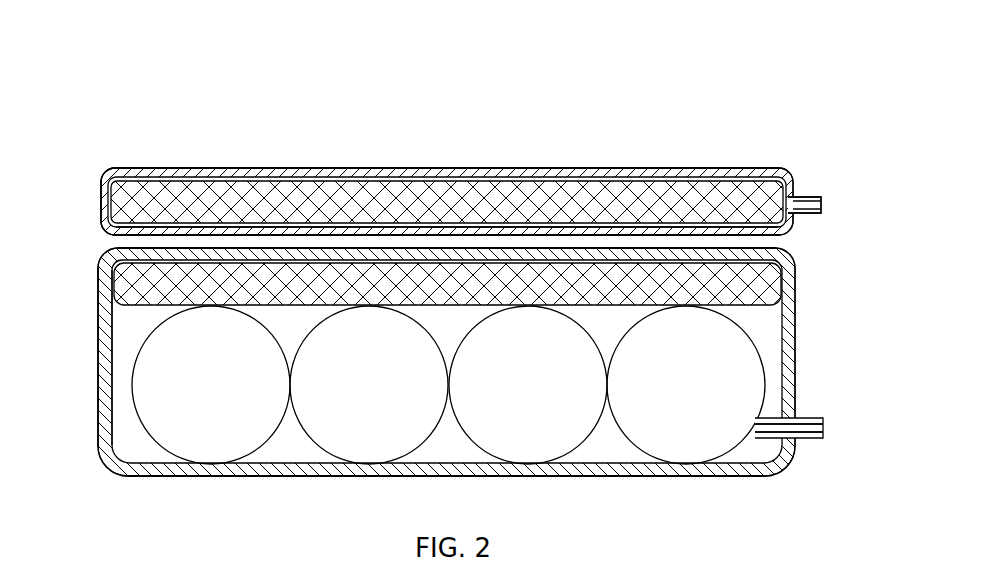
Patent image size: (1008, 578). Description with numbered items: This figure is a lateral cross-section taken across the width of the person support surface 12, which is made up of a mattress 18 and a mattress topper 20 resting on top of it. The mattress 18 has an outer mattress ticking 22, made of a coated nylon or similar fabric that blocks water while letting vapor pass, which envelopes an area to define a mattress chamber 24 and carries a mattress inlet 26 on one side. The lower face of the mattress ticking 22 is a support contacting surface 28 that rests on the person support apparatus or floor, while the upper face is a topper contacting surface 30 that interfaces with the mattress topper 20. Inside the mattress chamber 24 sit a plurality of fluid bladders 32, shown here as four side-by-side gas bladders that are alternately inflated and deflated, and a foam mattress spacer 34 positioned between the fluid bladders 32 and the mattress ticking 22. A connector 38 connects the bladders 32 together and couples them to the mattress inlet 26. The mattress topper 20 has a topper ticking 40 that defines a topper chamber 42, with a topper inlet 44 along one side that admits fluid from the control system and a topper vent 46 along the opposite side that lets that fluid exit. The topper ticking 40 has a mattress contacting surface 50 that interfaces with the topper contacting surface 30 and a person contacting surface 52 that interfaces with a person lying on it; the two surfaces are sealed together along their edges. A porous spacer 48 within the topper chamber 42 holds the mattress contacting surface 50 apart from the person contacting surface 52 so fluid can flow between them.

The person support surface 12 is at (725, 43).
The mattress 18 is at (816, 297).
The mattress topper 20 is at (804, 157).
The mattress ticking 22 is at (90, 435).
The mattress chamber 24 is at (122, 333).
The mattress inlet 26 is at (807, 440).
The support contacting surface 28 is at (393, 477).
The topper contacting surface 30 is at (523, 247).
The fluid bladders 32 is at (306, 440).
The mattress spacer 34 is at (760, 303).
The connector 38 is at (765, 430).
The topper ticking 40 is at (94, 238).
The topper chamber 42 is at (809, 185).
The topper inlet 44 is at (810, 214).
The topper vent 46 is at (101, 200).
The spacer 48 is at (712, 190).
The mattress contacting surface 50 is at (600, 236).
The person contacting surface 52 is at (585, 170).